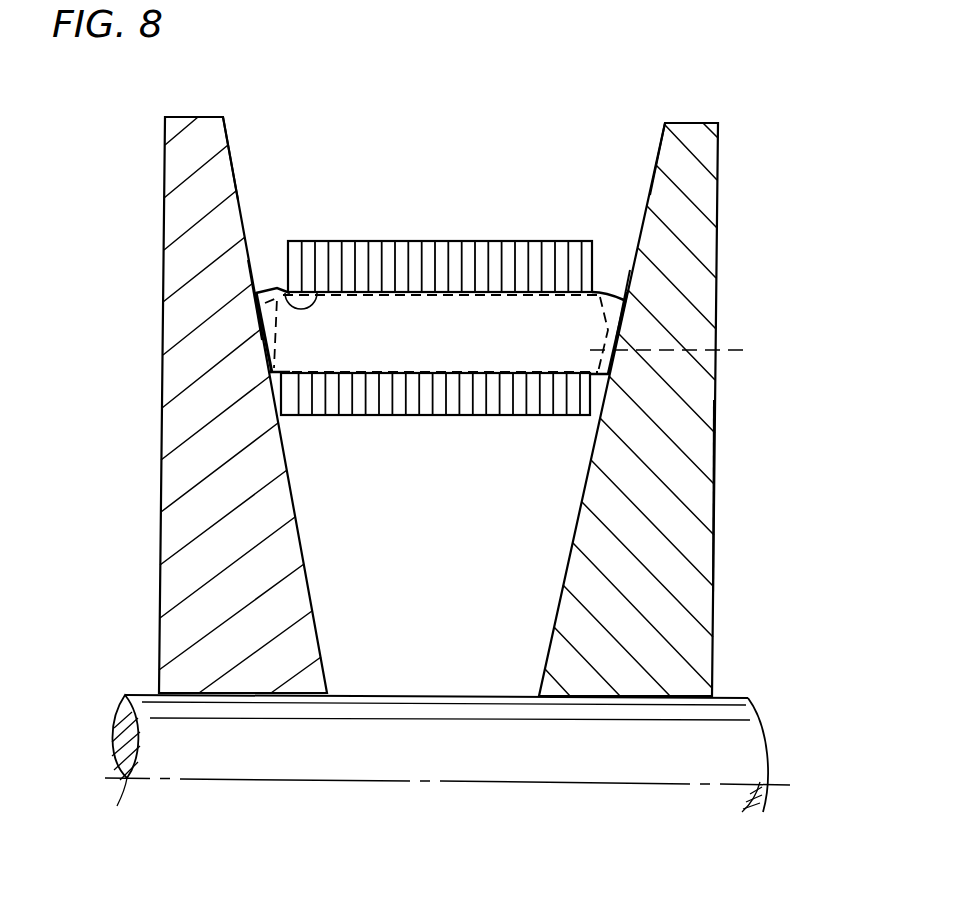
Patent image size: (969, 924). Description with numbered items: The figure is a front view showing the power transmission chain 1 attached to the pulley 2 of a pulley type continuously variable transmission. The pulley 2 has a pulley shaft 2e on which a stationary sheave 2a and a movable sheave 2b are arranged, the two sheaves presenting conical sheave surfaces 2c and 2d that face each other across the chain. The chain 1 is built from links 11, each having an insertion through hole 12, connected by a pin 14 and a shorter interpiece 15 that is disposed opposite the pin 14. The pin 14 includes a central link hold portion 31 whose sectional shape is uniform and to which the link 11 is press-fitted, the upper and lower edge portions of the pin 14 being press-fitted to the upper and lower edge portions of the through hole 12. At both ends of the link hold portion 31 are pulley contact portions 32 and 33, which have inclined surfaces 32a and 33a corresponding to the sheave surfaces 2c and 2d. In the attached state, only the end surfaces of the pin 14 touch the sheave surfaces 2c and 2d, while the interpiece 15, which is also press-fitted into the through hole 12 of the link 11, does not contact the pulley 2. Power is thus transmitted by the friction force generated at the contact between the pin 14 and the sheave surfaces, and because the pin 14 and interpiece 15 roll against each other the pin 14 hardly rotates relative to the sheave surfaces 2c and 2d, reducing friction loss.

The power transmission chain 1 is at (552, 223).
The pulley 2 is at (714, 455).
The stationary sheave 2a is at (685, 528).
The movable sheave 2b is at (180, 535).
The sheave surface 2c is at (645, 197).
The sheave surface 2d is at (237, 170).
The pulley shaft 2e is at (735, 752).
The link 11 is at (468, 241).
The front insertion through hole 12 is at (277, 295).
The pin 14 is at (627, 322).
The interpiece 15 is at (694, 354).
The link hold portion 31 is at (437, 355).
The pulley contact portion 32 is at (273, 303).
The inclined surface 32a is at (264, 352).
The pulley contact portion 33 is at (627, 291).
The inclined surface 33a is at (610, 370).